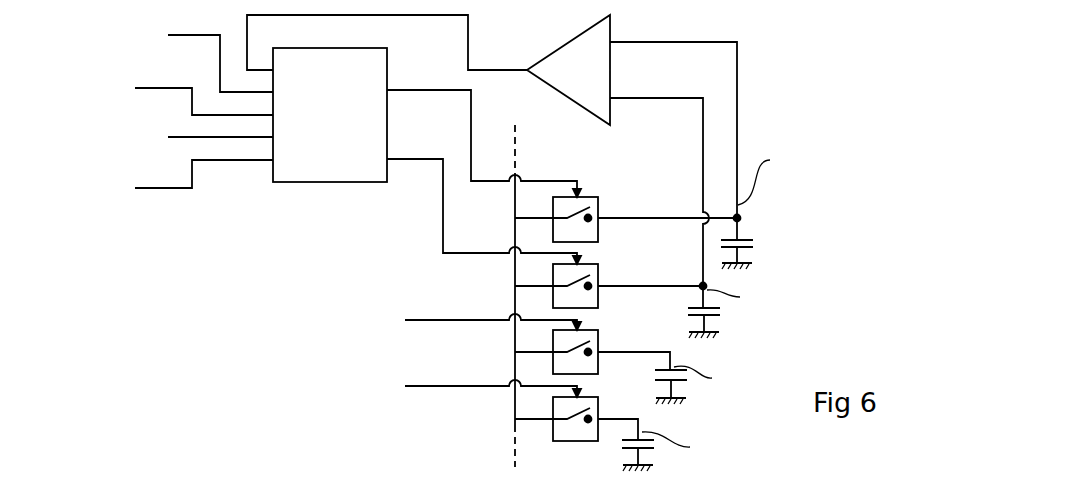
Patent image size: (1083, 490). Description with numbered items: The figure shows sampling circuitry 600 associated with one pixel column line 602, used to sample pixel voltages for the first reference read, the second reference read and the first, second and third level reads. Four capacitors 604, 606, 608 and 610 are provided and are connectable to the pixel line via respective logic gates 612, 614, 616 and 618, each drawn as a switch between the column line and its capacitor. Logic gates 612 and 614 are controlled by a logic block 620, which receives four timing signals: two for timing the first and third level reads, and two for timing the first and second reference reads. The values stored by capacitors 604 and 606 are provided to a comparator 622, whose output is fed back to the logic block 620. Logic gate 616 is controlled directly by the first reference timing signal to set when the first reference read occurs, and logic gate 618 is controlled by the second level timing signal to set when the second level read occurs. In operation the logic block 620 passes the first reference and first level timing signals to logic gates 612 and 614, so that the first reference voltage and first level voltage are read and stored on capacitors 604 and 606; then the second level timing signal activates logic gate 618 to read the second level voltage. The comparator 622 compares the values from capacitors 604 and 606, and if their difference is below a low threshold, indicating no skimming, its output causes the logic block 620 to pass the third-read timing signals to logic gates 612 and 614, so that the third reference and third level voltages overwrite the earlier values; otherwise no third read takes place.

The sampling circuitry 600 is at (790, 66).
The pixel column line 602 is at (515, 268).
The capacitor 604 is at (755, 245).
The capacitor 606 is at (684, 312).
The capacitor 608 is at (657, 378).
The capacitor 610 is at (617, 445).
The logic gate 612 is at (590, 196).
The logic gate 614 is at (588, 262).
The logic gate 616 is at (590, 328).
The logic gate 618 is at (590, 395).
The logic block 620 is at (330, 180).
The comparator 622 is at (604, 31).